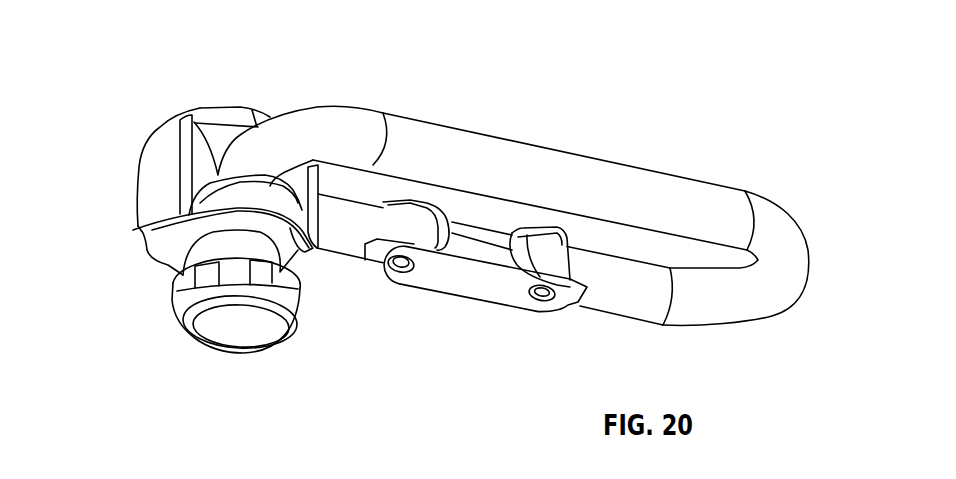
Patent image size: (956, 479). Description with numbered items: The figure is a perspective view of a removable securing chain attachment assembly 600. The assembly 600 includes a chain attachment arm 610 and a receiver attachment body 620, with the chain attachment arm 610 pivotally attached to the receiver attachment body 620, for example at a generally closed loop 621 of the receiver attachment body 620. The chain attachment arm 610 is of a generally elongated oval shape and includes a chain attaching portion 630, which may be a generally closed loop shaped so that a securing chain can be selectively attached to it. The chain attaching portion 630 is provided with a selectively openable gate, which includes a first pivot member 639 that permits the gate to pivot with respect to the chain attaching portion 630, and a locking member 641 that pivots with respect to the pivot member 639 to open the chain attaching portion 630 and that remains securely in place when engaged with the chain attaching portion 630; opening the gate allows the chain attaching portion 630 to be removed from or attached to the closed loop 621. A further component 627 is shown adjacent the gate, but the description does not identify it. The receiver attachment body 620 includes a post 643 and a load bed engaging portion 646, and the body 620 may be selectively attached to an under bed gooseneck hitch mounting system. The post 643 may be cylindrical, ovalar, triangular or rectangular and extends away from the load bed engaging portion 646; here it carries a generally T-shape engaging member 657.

The removable securing chain attachment assembly 600 is at (130, 32).
The chain attachment arm 610 is at (790, 261).
The receiver attachment body 620 is at (153, 167).
The closed loop 621 is at (192, 110).
The link 627 is at (473, 288).
The chain attaching portion 630 is at (563, 165).
The first pivot member 639 is at (401, 270).
The locking member 641 is at (542, 298).
The post 643 is at (238, 332).
The load bed engaging portion 646 is at (210, 192).
The T-shape engaging member 657 is at (180, 291).